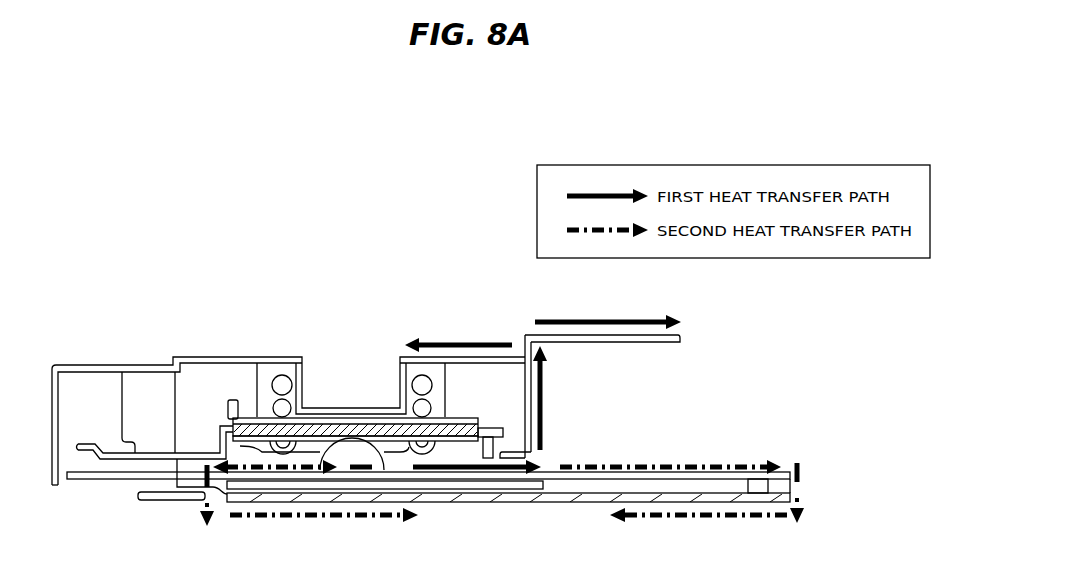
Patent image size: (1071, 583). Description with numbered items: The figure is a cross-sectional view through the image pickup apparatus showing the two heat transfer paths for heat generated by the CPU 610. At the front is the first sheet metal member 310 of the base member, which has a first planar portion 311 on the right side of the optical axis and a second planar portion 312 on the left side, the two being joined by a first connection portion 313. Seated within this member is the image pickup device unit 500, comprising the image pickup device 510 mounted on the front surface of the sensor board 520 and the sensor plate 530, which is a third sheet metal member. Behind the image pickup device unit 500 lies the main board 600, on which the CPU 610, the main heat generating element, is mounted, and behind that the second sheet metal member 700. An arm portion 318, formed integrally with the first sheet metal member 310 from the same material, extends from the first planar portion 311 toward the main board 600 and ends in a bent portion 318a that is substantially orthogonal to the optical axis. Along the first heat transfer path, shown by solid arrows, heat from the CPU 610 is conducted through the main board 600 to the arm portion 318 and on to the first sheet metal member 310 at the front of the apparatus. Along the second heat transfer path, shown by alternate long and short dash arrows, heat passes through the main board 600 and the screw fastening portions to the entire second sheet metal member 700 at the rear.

The first sheet metal member 310 is at (641, 366).
The first planar portion 311 is at (603, 342).
The second planar portion 312 is at (80, 366).
The first connection portion 313 is at (460, 353).
The arm portion 318 is at (530, 400).
The bent portion 318a is at (548, 450).
The image pickup device unit 500 is at (82, 292).
The image pickup device 510 is at (335, 423).
The sensor board 520 is at (287, 423).
The sensor plate 530 is at (228, 407).
The main board 600 is at (498, 477).
The CPU 610 is at (420, 481).
The second sheet metal member 700 is at (578, 497).